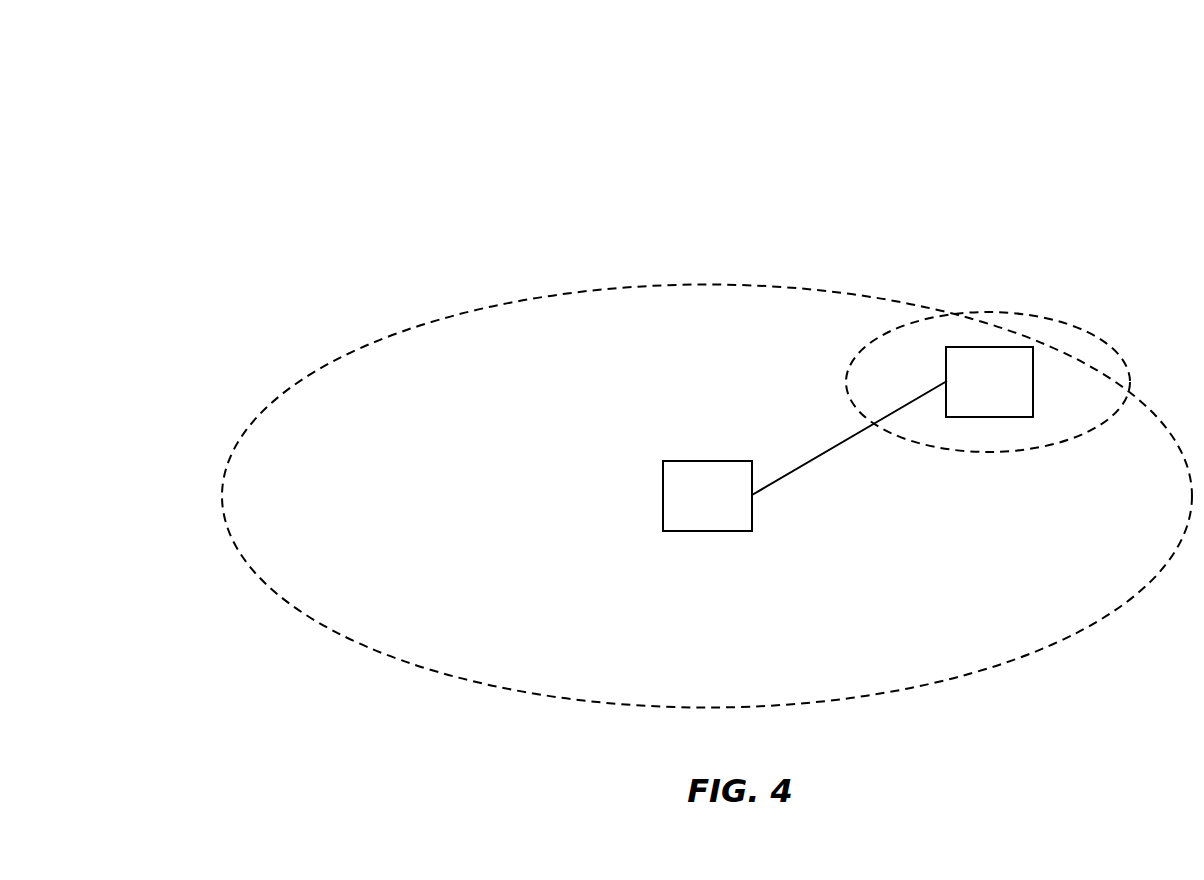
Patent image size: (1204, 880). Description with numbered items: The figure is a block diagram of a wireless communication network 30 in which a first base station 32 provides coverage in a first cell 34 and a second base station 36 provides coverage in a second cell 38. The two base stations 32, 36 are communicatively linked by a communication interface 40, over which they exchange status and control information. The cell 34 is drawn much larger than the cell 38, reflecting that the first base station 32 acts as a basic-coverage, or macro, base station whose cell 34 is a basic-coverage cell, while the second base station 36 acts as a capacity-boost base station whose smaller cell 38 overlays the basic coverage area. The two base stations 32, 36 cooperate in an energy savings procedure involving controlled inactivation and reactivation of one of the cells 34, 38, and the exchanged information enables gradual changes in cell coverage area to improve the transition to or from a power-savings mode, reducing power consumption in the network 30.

The wireless communication network 30 is at (532, 215).
The first base station 32 is at (707, 496).
The first cell 34 is at (553, 697).
The second base station 36 is at (989, 382).
The second cell 38 is at (961, 451).
The communication interface 40 is at (849, 438).